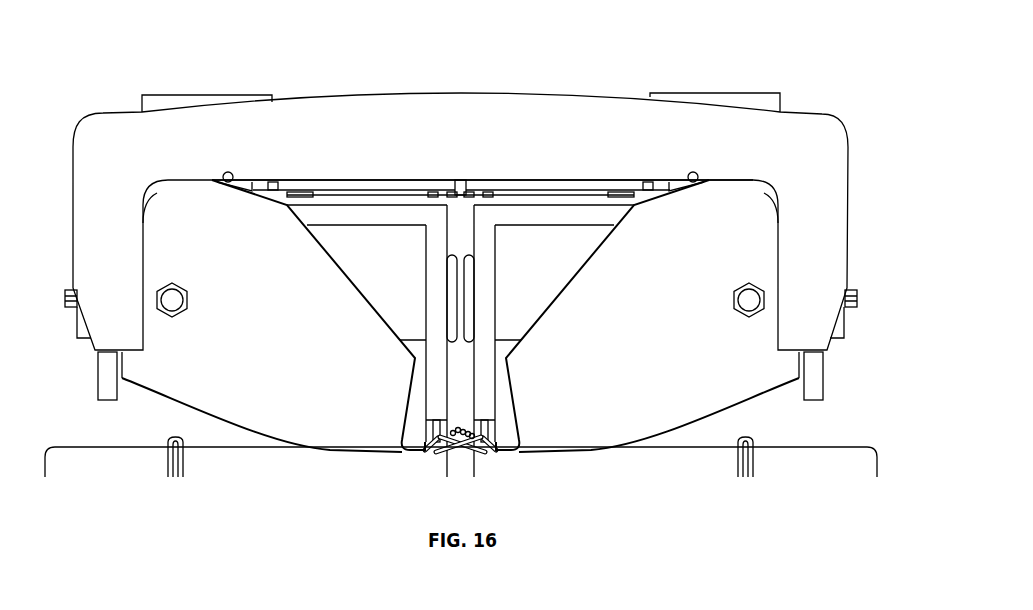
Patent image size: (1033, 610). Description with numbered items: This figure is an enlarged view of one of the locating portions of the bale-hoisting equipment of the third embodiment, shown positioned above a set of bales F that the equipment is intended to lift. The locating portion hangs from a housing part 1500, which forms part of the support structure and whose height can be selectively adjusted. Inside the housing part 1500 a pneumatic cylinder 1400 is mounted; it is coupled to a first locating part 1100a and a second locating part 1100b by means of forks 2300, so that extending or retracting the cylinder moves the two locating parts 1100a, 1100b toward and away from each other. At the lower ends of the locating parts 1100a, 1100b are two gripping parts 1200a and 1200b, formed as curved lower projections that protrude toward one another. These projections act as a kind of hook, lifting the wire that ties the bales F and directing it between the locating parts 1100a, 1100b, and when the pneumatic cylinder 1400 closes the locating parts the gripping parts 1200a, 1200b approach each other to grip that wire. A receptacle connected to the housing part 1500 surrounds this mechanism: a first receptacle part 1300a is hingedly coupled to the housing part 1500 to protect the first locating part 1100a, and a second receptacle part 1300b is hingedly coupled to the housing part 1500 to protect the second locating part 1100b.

The housing part 1500 is at (827, 130).
The pneumatic cylinder 1400 is at (543, 178).
The forks 2300 is at (237, 179).
The first locating part 1100a is at (430, 312).
The second locating part 1100b is at (489, 312).
The first gripping part 1200a is at (430, 450).
The second gripping part 1200b is at (494, 450).
The first receptacle part 1300a is at (188, 381).
The second receptacle part 1300b is at (647, 378).
The bales F is at (58, 443).